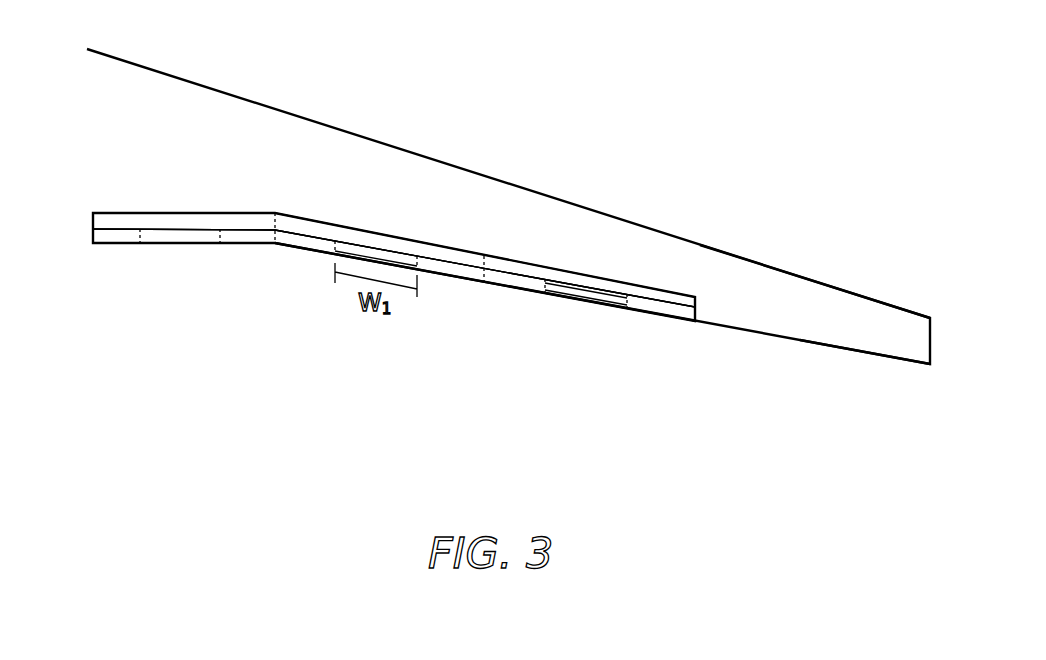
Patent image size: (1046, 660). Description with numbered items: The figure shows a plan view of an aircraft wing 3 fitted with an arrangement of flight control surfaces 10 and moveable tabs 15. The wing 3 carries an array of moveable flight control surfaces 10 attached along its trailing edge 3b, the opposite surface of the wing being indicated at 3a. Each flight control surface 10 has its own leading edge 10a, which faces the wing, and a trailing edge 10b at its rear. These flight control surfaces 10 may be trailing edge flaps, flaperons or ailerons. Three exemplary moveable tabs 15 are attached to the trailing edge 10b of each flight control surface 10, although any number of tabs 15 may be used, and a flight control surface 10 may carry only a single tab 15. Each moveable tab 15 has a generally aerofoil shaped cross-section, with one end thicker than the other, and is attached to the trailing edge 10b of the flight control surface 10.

The wing 3 is at (500, 205).
The upper surface of base member 3a is at (798, 279).
The trailing edge of the wing 3b is at (893, 360).
The flight control surface 10 is at (118, 222).
The leading edge of the flight control surface 10a is at (198, 212).
The trailing edge of the flight control surface 10b is at (207, 232).
The moveable tab 15 is at (455, 272).